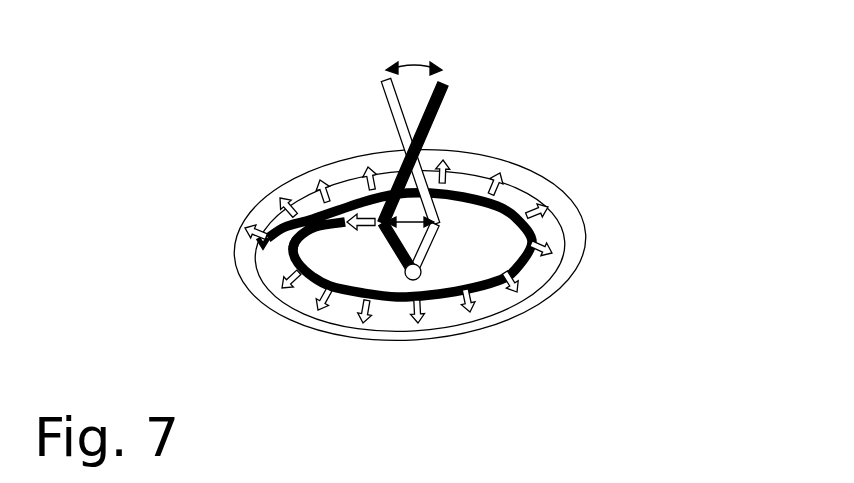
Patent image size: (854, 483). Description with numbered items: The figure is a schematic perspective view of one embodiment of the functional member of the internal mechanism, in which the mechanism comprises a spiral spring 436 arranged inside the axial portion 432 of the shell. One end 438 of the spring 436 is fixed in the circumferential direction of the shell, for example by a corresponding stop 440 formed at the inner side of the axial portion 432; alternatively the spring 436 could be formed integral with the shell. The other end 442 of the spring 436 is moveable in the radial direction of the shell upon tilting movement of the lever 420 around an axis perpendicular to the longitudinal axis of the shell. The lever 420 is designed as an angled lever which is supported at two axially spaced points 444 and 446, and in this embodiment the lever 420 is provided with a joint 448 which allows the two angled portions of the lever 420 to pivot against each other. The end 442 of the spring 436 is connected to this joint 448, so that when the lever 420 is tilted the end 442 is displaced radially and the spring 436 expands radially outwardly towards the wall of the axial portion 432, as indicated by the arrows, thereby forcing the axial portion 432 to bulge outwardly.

The lever 420 is at (450, 116).
The axial portion 432 is at (557, 266).
The spiral spring 436 is at (510, 202).
The end 438 is at (262, 210).
The stop 440 is at (284, 244).
The other end 442 is at (340, 263).
The point 444 is at (420, 280).
The point 446 is at (375, 150).
The joint 448 is at (340, 190).